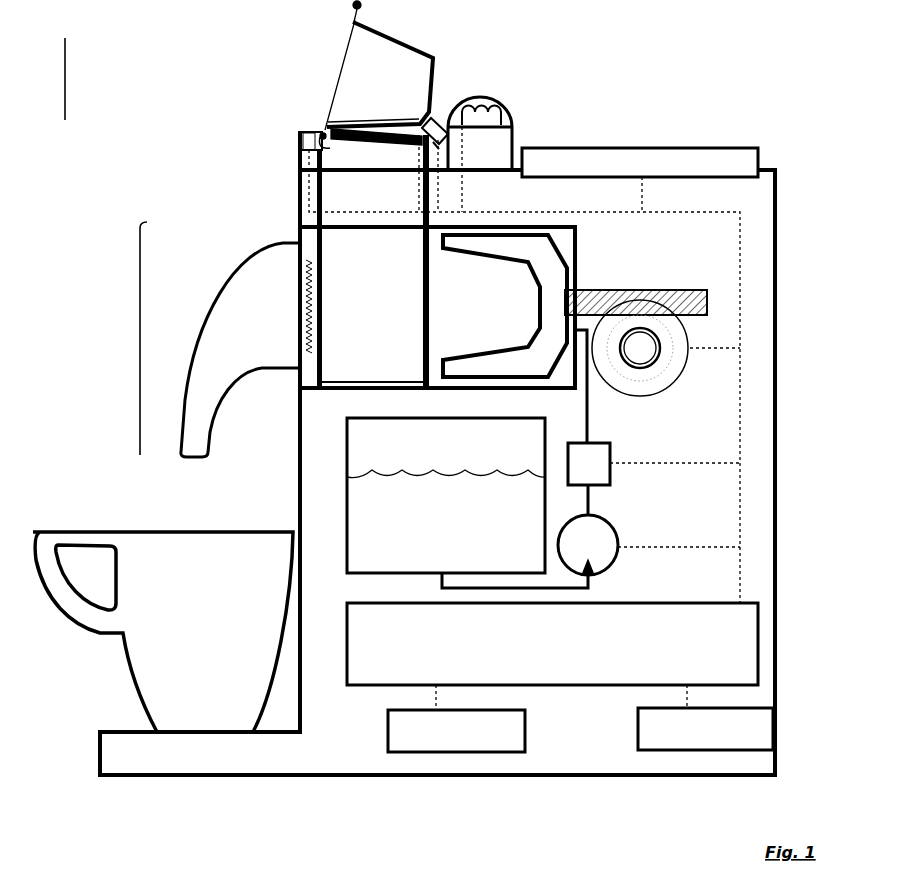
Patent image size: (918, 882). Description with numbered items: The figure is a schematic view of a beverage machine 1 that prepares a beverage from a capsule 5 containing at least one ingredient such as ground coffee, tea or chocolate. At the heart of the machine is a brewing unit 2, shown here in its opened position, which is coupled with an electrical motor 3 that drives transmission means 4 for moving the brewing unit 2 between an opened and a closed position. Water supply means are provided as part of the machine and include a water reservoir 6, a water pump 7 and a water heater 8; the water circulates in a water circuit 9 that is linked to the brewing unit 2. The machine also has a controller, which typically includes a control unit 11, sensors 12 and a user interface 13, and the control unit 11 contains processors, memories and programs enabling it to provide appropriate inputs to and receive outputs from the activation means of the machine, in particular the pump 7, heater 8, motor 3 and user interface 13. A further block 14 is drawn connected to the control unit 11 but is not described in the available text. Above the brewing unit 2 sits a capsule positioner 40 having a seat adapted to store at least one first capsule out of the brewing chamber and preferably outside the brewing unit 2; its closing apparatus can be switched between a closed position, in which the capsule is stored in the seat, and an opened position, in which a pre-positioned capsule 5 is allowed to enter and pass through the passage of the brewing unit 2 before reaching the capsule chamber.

The beverage machine 1 is at (65, 72).
The brewing unit 2 is at (140, 254).
The electrical motor 3 is at (650, 365).
The transmission means 4 is at (673, 350).
The capsule 5 is at (347, 38).
The water reservoir 6 is at (347, 467).
The water pump 7 is at (615, 558).
The water heater 8 is at (610, 480).
The water circuit 9 is at (590, 400).
The control unit 11 is at (368, 687).
The sensors 12 is at (470, 752).
The user interface 13 is at (697, 148).
The communication interface 14 is at (677, 750).
The capsule positioner 40 is at (305, 132).